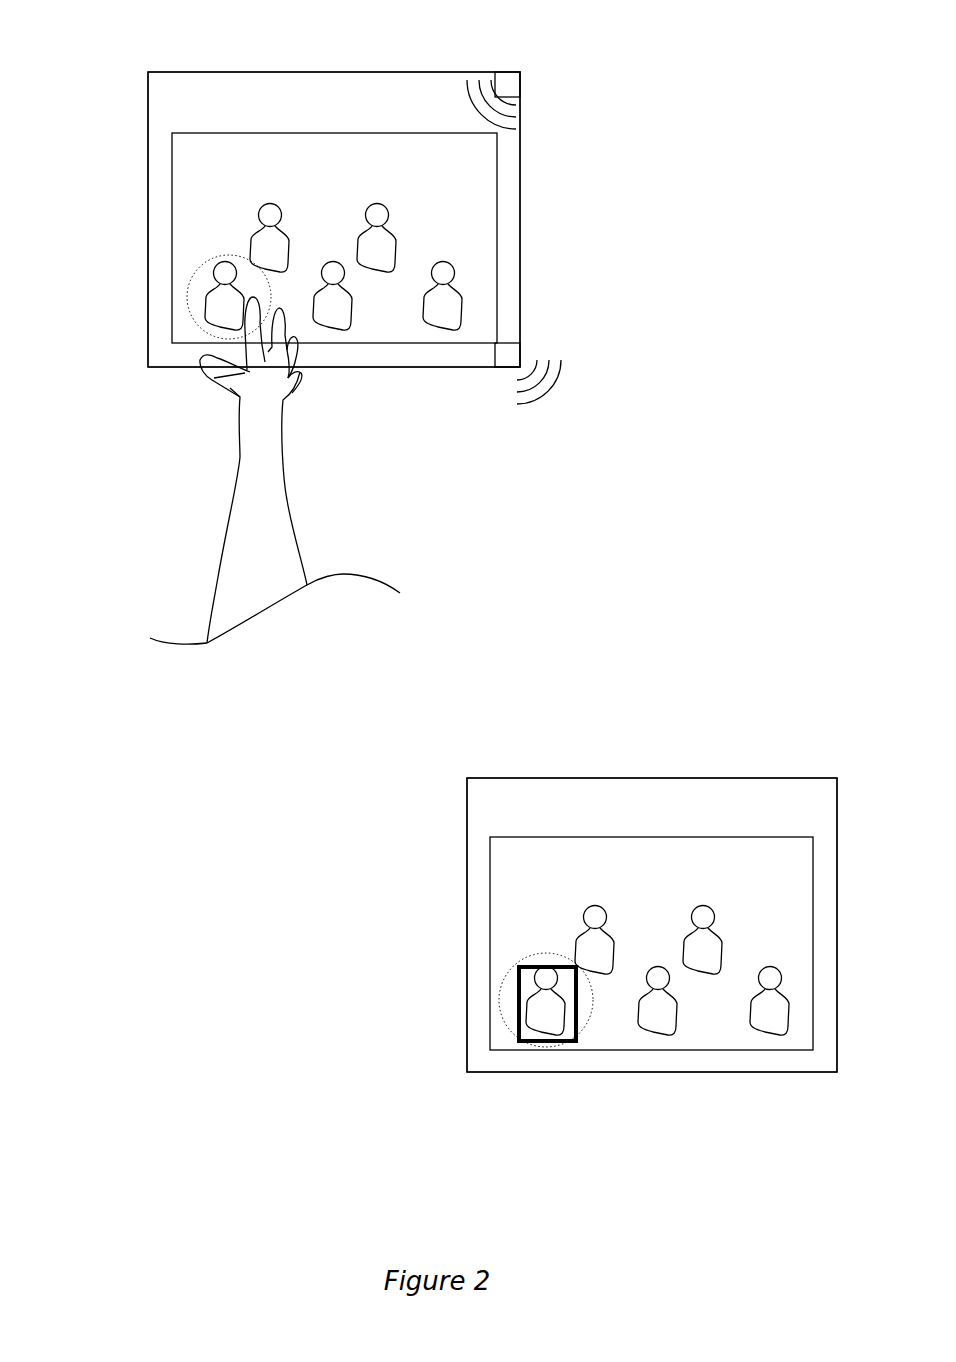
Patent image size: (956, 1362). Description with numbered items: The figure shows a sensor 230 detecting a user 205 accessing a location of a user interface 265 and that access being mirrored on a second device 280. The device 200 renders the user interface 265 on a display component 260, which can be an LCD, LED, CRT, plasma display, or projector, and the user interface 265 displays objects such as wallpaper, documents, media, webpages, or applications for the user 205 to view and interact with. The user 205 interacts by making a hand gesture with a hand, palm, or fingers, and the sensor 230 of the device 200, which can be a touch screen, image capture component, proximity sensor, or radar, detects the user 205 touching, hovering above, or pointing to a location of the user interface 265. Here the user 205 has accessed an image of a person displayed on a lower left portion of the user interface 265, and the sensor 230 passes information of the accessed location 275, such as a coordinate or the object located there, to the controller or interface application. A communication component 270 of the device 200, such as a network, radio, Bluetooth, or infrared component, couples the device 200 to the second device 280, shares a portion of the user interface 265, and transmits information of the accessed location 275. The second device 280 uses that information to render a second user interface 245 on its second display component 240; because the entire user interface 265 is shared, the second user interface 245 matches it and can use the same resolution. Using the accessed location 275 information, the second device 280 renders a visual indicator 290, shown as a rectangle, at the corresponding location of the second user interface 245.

The device 200 is at (233, 62).
The user 205 is at (245, 572).
The sensor 230 is at (514, 68).
The second display component 240 is at (635, 832).
The second user interface 245 is at (633, 902).
The display component 260 is at (316, 127).
The user interface 265 is at (525, 499).
The communication component 270 is at (509, 330).
The accessed location 275 is at (644, 447).
The second device 280 is at (712, 765).
The visual indicator 290 is at (587, 1008).